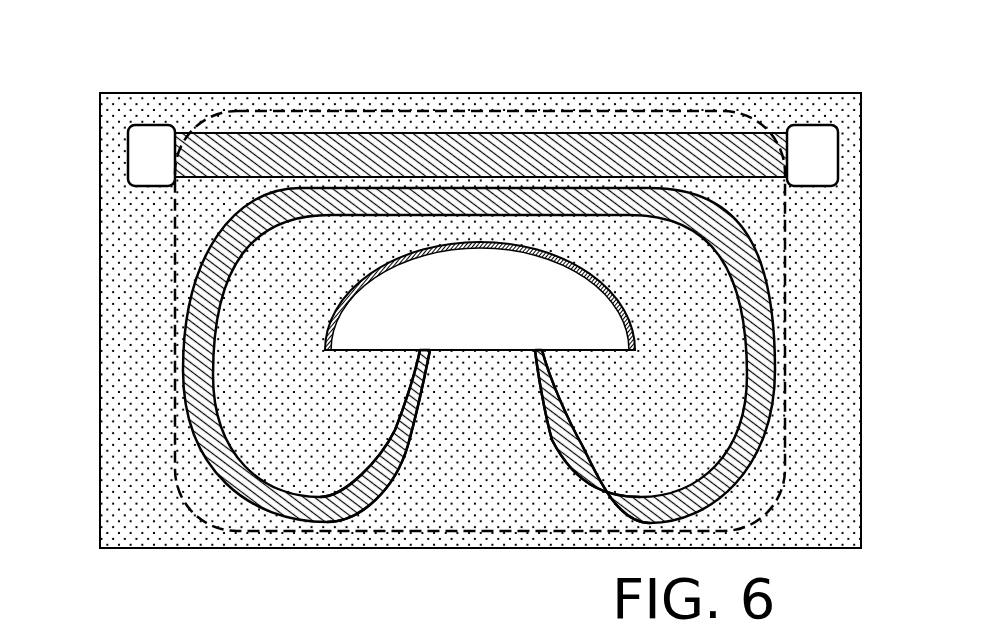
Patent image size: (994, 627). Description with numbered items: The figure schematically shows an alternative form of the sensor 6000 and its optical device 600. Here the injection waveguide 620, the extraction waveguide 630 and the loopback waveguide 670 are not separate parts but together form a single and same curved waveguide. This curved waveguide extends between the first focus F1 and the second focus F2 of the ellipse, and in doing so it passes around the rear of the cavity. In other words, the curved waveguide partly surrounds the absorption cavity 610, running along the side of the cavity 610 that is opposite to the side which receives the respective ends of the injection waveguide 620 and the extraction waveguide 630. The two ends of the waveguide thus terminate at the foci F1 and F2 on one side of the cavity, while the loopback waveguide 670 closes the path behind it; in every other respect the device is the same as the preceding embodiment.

The sensor 6000 is at (826, 77).
The optical device 600 is at (672, 112).
The absorption cavity 610 is at (575, 303).
The injection waveguide 620 is at (410, 453).
The extraction waveguide 630 is at (562, 445).
The loopback waveguide 670 is at (203, 308).
The first focus F1 is at (426, 350).
The second focus F2 is at (537, 350).